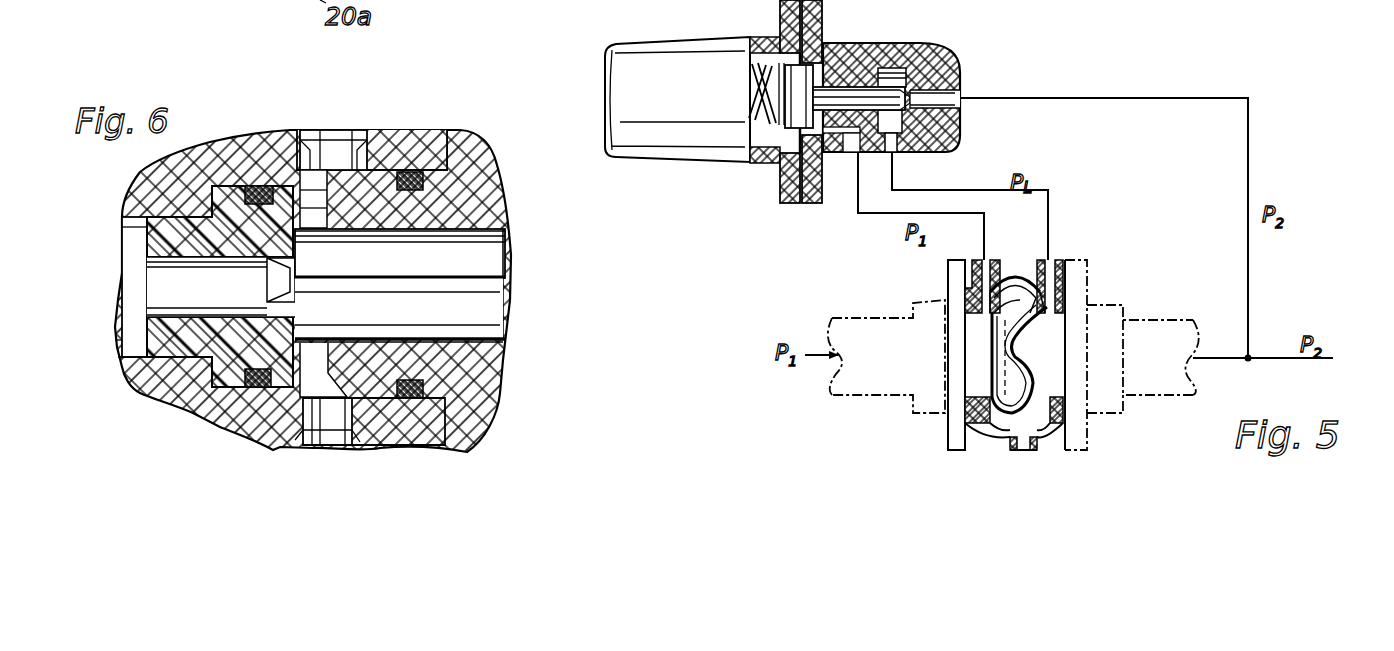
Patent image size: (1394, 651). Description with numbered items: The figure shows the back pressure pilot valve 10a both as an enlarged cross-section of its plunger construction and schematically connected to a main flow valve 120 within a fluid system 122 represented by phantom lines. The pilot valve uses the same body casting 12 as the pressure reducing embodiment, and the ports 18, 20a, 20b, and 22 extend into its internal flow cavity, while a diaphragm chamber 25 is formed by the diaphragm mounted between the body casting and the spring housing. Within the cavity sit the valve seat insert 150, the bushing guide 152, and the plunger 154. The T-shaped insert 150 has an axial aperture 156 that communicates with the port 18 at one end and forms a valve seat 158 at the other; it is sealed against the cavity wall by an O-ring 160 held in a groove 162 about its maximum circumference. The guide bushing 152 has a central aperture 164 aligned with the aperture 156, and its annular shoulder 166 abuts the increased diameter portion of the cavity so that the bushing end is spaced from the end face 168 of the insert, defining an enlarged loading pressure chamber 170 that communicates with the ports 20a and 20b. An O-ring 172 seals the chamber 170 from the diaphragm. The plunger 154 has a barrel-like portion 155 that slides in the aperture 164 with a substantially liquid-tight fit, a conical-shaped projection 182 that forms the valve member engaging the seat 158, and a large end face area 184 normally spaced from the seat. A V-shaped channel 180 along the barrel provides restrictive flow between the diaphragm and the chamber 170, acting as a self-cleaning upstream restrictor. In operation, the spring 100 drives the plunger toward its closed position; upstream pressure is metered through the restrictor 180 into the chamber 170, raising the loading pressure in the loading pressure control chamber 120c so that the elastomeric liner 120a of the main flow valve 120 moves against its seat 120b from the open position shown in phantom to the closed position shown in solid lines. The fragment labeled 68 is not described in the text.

In FIG. 5, the back pressure pilot valve 10a is at (881, 30).
In FIG. 6, the body casting 12 is at (550, 3).
In FIG. 6, the port 18 is at (127, 352).
In FIG. 5, the port 18 is at (958, 90).
In FIG. 6, the port 20a is at (335, 440).
In FIG. 5, the port 20a is at (890, 153).
In FIG. 6, the port 20b is at (340, 130).
In FIG. 5, the port 22 is at (850, 157).
In FIG. 5, the diaphragm chamber 25 is at (783, 155).
In FIG. 6, the spring 68 is at (454, 6).
In FIG. 5, the spring 100 is at (752, 97).
In FIG. 5, the main flow valve 120 is at (1015, 275).
In FIG. 5, the elastomeric liner 120a is at (990, 360).
In FIG. 5, the seat 120b is at (993, 317).
In FIG. 5, the loading pressure control chamber 120c is at (1027, 408).
In FIG. 5, the fluid system 122 is at (893, 320).
In FIG. 6, the valve seat insert 150 is at (145, 217).
In FIG. 6, the bushing guide 152 is at (480, 168).
In FIG. 5, the plunger 154 is at (908, 112).
In FIG. 6, the barrel-like portion 155 is at (485, 322).
In FIG. 6, the axial aperture 156 is at (123, 267).
In FIG. 6, the valve seat 158 is at (300, 310).
In FIG. 6, the O-ring 160 is at (247, 393).
In FIG. 6, the groove 162 is at (240, 212).
In FIG. 6, the central aperture 164 is at (513, 238).
In FIG. 6, the annular shoulder 166 is at (438, 152).
In FIG. 6, the end face 168 is at (312, 220).
In FIG. 6, the enlarged loading pressure chamber 170 is at (308, 198).
In FIG. 5, the enlarged loading pressure chamber 170 is at (925, 47).
In FIG. 6, the O-ring 172 is at (452, 388).
In FIG. 6, the V-shaped channel 180 is at (502, 283).
In FIG. 5, the V-shaped channel 180 is at (858, 97).
In FIG. 6, the conical-shaped projection 182 is at (273, 285).
In FIG. 6, the end face area 184 is at (287, 327).